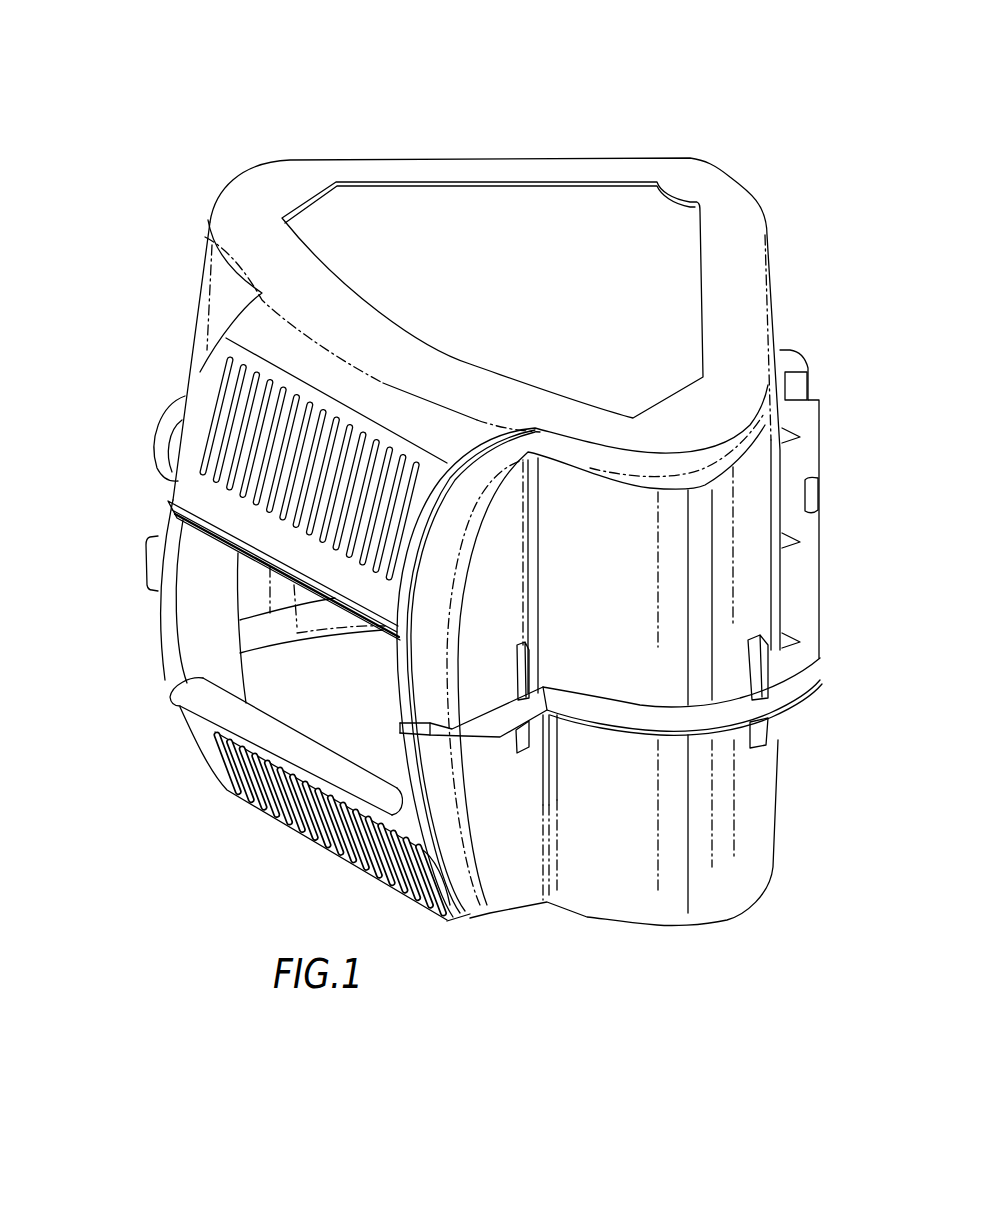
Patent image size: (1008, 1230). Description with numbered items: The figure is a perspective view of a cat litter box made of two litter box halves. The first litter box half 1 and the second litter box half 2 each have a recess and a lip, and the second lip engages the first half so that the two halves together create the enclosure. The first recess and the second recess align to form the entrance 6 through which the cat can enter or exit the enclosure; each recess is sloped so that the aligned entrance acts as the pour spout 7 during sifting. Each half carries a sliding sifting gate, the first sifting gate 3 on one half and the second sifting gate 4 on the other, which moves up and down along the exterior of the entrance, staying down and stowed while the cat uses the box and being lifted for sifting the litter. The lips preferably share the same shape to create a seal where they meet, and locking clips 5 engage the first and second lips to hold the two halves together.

The enclosure 1 is at (497, 228).
The enclosure 2 is at (665, 870).
The first sifting gate 3 is at (215, 402).
The second sifting gate 4 is at (270, 804).
The locking clips 5 is at (815, 476).
The entrance/exit 6 is at (267, 677).
The pour spout area 7 is at (467, 870).